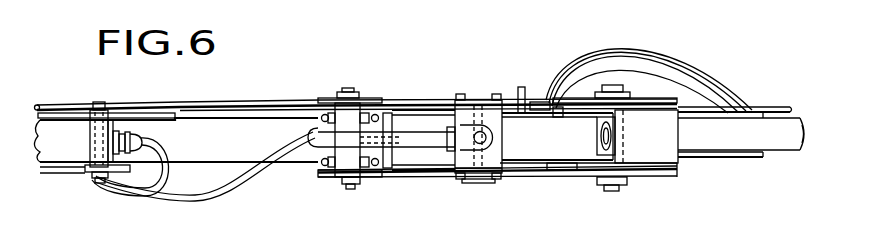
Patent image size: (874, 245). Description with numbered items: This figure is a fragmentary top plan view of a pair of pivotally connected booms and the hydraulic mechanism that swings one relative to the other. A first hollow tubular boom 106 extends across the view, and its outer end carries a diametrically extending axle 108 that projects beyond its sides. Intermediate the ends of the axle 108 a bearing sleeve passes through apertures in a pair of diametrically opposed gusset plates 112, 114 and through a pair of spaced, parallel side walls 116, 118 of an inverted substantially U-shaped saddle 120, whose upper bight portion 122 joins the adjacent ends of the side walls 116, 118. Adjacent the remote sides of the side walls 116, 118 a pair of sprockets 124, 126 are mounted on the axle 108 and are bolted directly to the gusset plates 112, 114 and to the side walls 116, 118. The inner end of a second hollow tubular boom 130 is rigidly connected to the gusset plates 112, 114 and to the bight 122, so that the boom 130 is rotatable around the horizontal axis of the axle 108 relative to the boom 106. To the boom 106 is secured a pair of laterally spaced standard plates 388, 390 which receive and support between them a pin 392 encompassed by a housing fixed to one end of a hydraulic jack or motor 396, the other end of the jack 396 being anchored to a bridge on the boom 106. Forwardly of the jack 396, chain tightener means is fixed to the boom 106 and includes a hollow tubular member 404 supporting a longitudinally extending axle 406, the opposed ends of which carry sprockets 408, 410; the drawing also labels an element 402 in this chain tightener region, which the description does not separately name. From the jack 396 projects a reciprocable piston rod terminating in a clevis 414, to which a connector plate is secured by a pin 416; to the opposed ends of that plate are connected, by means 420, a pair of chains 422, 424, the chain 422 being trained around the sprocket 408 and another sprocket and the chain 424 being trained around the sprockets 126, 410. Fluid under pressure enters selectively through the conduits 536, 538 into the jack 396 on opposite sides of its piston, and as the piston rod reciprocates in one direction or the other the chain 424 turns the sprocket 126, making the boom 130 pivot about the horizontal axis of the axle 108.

The first hollow tubular boom 106 is at (60, 158).
The axle 108 is at (613, 192).
The gusset plate 112 is at (745, 112).
The gusset plate 114 is at (755, 158).
The side wall 116 is at (553, 100).
The side wall 118 is at (574, 168).
The saddle 120 is at (687, 144).
The bight portion 122 is at (660, 152).
The sprocket 124 is at (650, 97).
The sprocket 126 is at (660, 178).
The second hollow tubular boom 130 is at (787, 148).
The standard plate 388 is at (123, 117).
The standard plate 390 is at (132, 173).
The pin 392 is at (100, 178).
The hydraulic jack or motor 396 is at (222, 147).
The piston rod 402 is at (390, 153).
The hollow tubular member 404 is at (345, 158).
The axle 406 is at (353, 187).
The sprocket 408 is at (370, 100).
The sprocket 410 is at (370, 182).
The clevis 414 is at (468, 132).
The pin 416 is at (486, 137).
The means 420 is at (458, 97).
The chain 422 is at (522, 98).
The chain 424 is at (556, 173).
The conduit 536 is at (157, 152).
The conduit 538 is at (200, 197).